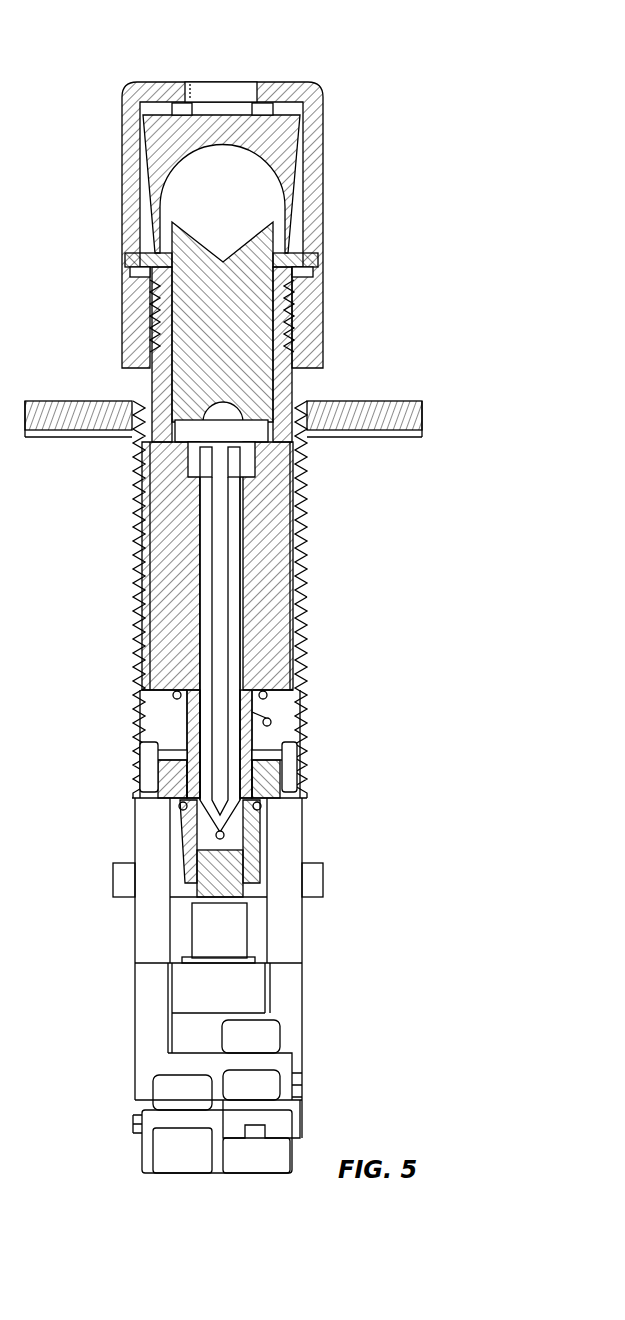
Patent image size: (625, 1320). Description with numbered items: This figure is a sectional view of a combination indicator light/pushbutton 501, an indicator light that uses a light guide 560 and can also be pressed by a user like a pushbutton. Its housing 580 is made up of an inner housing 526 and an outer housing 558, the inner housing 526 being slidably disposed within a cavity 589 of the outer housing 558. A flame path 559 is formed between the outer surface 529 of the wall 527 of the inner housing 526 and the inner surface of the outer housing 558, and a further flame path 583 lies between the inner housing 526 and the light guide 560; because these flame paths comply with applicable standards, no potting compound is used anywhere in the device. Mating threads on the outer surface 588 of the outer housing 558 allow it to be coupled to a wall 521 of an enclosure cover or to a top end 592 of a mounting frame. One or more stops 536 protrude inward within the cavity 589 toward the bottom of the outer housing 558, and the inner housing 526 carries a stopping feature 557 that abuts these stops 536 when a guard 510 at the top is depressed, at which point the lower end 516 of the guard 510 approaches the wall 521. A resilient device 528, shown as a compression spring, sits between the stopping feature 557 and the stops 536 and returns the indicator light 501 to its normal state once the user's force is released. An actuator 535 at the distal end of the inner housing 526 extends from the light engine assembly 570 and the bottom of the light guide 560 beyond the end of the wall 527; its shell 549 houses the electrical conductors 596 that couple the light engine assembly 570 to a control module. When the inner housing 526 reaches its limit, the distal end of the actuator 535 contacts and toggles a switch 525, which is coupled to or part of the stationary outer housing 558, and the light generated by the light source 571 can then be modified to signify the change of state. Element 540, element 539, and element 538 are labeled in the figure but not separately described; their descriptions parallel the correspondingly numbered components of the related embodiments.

The combination indicator light/pushbutton 501 is at (352, 58).
The guard 510 is at (119, 105).
The seal insert 540 is at (299, 111).
The flame path 583 is at (168, 300).
The lower end 516 is at (150, 360).
The light guide 560 is at (279, 322).
The central plug 539 is at (272, 420).
The light source 571 is at (225, 402).
The wall 521 is at (352, 403).
The top end 592 is at (350, 438).
The plate assembly 538 is at (85, 376).
The light engine assembly 570 is at (166, 438).
The outer housing 558 is at (131, 642).
The flame path 559 is at (295, 500).
The outer surface 588 is at (305, 633).
The inner housing 526 is at (143, 580).
The wall 527 is at (287, 548).
The outer surface 529 is at (296, 536).
The shell 549 is at (220, 680).
The electrical conductors 596 is at (225, 604).
The stopping feature 557 is at (163, 731).
The resilient device 528 is at (297, 713).
The cavity 589 is at (158, 750).
The stops 536 is at (165, 795).
The housing 580 is at (101, 692).
The actuator 535 is at (312, 883).
The switch 525 is at (116, 905).